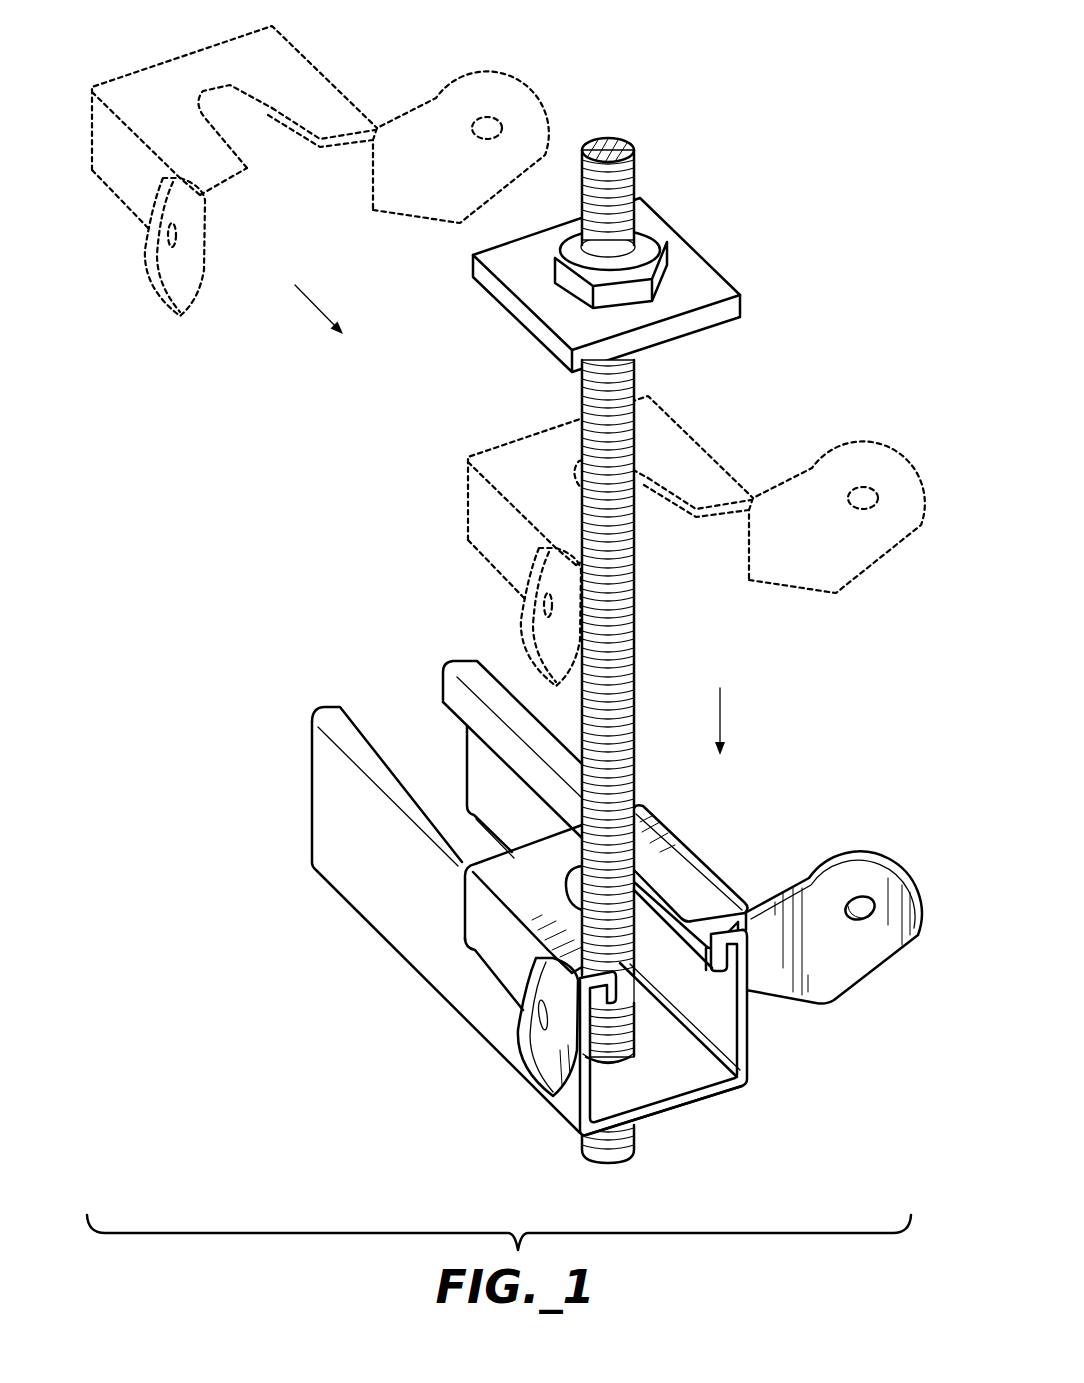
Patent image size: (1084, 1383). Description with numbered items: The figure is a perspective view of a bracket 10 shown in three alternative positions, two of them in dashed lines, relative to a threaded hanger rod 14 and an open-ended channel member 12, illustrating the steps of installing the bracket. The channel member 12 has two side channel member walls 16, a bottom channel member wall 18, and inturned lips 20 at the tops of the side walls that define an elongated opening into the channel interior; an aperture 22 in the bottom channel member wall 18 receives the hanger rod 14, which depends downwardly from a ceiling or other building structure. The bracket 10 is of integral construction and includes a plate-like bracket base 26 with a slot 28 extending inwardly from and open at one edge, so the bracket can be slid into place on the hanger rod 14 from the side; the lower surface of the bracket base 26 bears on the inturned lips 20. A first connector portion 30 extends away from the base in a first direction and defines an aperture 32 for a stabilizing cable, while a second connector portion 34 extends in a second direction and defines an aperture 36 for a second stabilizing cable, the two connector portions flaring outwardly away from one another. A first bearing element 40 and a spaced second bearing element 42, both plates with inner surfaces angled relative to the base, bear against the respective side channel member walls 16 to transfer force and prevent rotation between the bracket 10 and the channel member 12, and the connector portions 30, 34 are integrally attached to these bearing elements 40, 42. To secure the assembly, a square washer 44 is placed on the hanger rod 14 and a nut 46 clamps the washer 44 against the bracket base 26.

The bracket 10 is at (322, 61).
The channel member 12 is at (493, 886).
The hanger rod 14 is at (636, 671).
The side channel member walls 16 is at (480, 753).
The bottom channel member wall 18 is at (685, 1086).
The inturned lips 20 is at (461, 663).
The aperture 22 is at (630, 1058).
The bracket base 26 is at (182, 65).
The slot 28 is at (235, 145).
The first connector portion 30 is at (192, 272).
The aperture 32 is at (183, 236).
The second connector portion 34 is at (538, 133).
The aperture 36 is at (505, 125).
The first bearing element 40 is at (120, 186).
The second bearing element 42 is at (357, 172).
The square washer 44 is at (690, 275).
The nut 46 is at (572, 245).